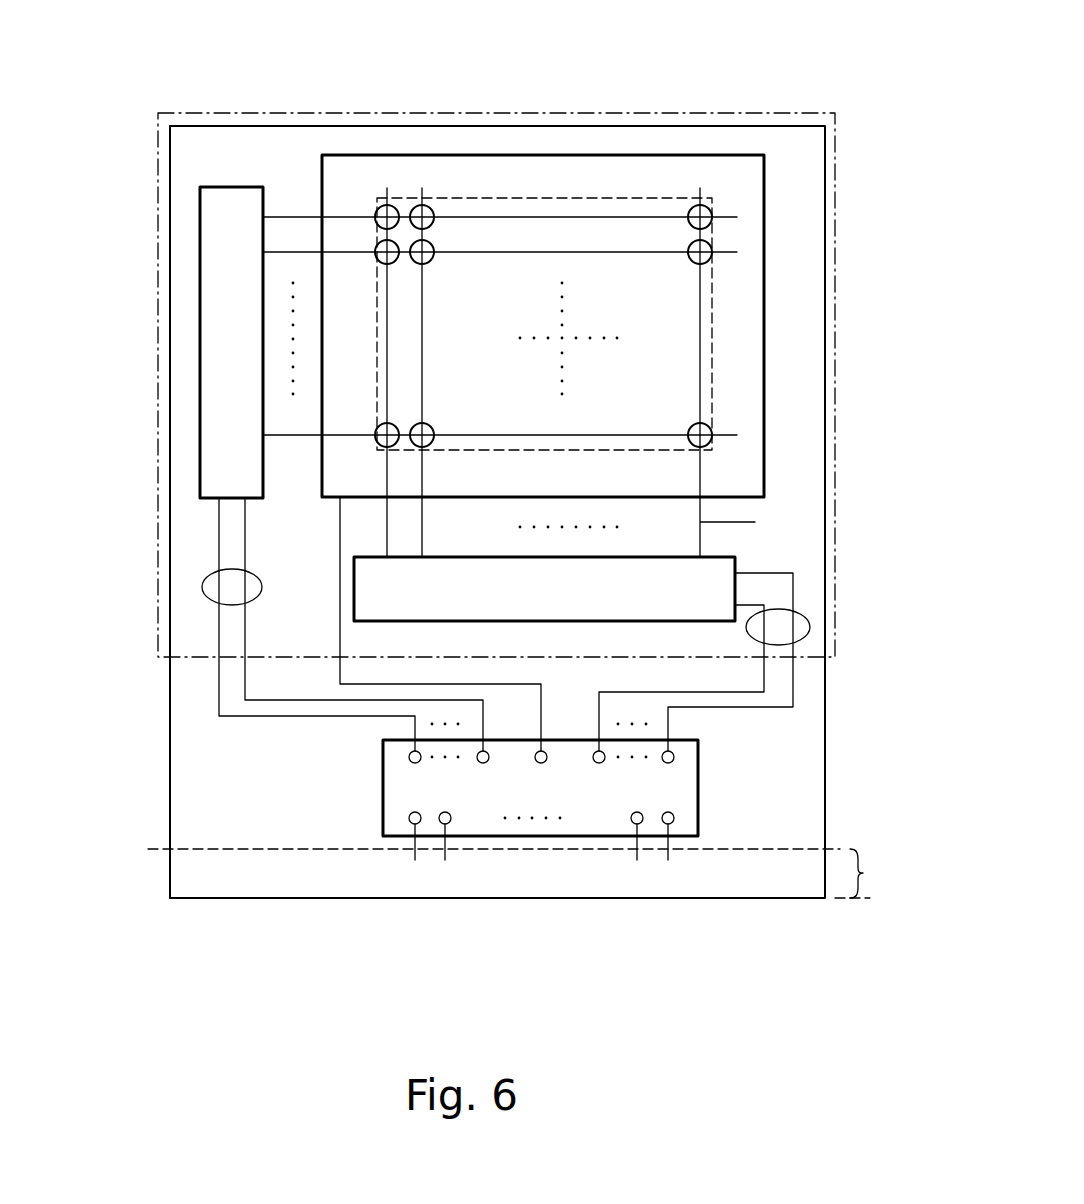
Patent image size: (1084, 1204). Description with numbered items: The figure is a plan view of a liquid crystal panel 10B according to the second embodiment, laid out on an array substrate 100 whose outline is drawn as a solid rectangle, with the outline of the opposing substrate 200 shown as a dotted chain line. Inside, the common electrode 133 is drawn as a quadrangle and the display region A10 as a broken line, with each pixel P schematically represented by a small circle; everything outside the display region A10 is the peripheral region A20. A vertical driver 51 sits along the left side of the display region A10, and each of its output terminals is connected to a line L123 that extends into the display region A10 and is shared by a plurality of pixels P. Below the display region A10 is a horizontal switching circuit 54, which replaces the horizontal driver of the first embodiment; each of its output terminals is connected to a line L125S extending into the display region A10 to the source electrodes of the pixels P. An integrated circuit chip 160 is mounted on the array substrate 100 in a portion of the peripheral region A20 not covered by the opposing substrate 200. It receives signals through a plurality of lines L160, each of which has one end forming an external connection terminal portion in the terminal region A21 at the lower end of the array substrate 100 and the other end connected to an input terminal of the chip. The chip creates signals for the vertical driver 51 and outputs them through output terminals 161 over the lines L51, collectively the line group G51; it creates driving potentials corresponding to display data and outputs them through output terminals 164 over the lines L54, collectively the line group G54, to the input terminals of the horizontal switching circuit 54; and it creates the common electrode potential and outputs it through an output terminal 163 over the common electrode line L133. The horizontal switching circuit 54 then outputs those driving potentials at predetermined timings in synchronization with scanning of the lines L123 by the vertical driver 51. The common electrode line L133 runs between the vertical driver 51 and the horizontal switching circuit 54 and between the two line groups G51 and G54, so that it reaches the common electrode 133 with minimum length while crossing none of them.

The liquid crystal panel 10B is at (489, 92).
The opposing substrate 200 is at (700, 118).
The array substrate 100 is at (786, 131).
The vertical driver 51 is at (228, 188).
The line L123 is at (287, 217).
The pixel P is at (690, 210).
The common electrode 133 is at (745, 263).
The display region A10 is at (716, 300).
The peripheral region A20 is at (790, 373).
The line L125S is at (755, 522).
The horizontal switching circuit 54 is at (735, 557).
The line L54 is at (795, 588).
The line group G54 is at (805, 614).
The line L51 is at (219, 551).
The line group G51 is at (217, 597).
The common electrode line L133 is at (337, 548).
The integrated circuit chip 160 is at (612, 823).
The output terminal 161 is at (415, 763).
The output terminal 163 is at (541, 768).
The output terminal 164 is at (668, 763).
The line L160 is at (668, 857).
The terminal region A21 is at (527, 873).